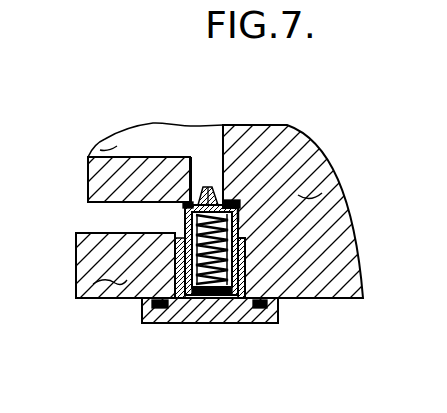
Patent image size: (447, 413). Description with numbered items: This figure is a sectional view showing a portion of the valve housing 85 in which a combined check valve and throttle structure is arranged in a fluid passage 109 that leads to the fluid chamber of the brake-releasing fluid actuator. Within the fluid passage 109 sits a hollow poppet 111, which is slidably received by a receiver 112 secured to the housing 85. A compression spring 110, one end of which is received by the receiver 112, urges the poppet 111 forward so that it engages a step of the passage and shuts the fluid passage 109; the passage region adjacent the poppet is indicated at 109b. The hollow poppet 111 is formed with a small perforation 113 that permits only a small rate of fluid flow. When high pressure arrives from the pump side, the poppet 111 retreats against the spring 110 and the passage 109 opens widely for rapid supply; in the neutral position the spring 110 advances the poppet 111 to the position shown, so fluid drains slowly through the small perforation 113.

The valve housing 85 is at (338, 183).
The fluid passage 109 is at (76, 245).
The bore 109b is at (253, 222).
The compression spring 110 is at (220, 323).
The hollow poppet 111 is at (75, 299).
The receiver 112 is at (183, 305).
The small perforation 113 is at (207, 187).